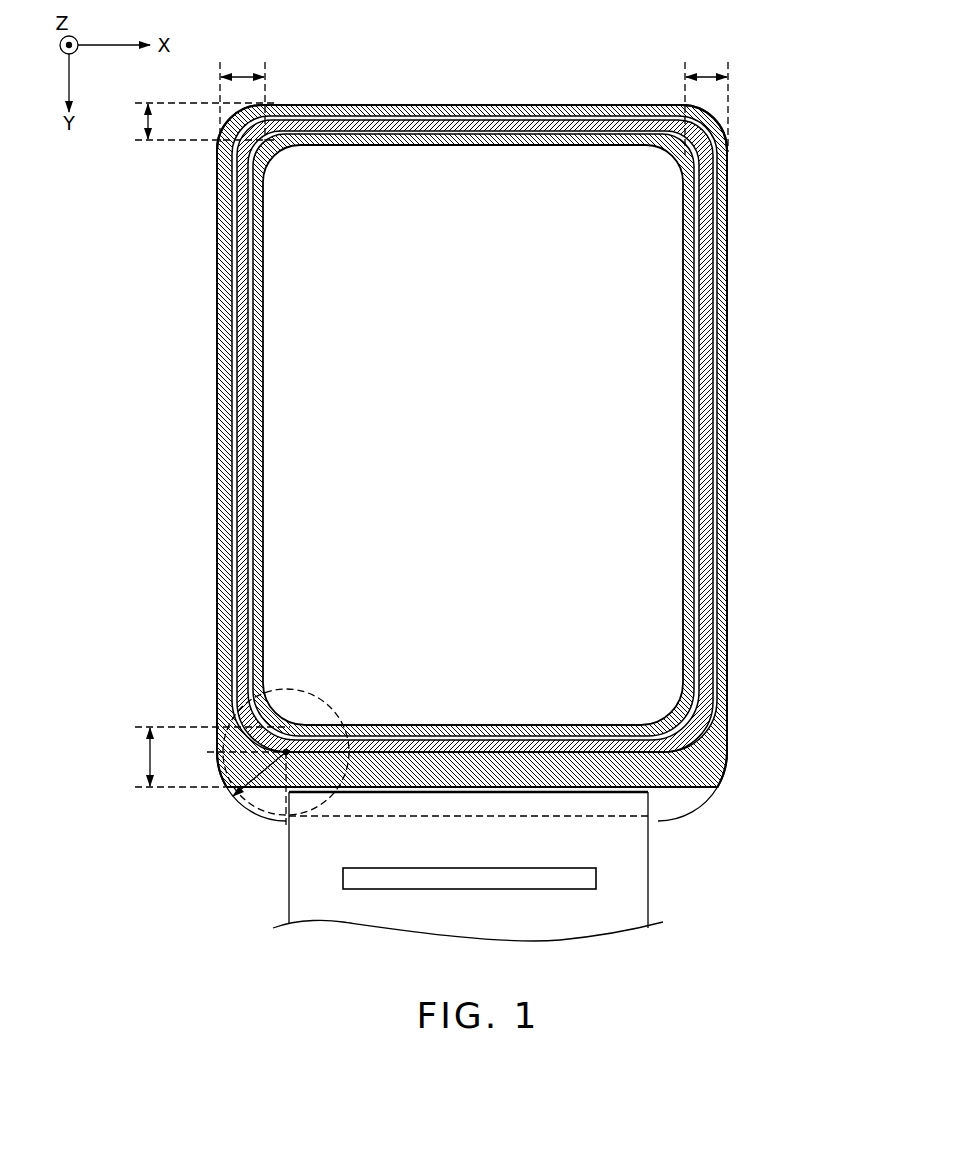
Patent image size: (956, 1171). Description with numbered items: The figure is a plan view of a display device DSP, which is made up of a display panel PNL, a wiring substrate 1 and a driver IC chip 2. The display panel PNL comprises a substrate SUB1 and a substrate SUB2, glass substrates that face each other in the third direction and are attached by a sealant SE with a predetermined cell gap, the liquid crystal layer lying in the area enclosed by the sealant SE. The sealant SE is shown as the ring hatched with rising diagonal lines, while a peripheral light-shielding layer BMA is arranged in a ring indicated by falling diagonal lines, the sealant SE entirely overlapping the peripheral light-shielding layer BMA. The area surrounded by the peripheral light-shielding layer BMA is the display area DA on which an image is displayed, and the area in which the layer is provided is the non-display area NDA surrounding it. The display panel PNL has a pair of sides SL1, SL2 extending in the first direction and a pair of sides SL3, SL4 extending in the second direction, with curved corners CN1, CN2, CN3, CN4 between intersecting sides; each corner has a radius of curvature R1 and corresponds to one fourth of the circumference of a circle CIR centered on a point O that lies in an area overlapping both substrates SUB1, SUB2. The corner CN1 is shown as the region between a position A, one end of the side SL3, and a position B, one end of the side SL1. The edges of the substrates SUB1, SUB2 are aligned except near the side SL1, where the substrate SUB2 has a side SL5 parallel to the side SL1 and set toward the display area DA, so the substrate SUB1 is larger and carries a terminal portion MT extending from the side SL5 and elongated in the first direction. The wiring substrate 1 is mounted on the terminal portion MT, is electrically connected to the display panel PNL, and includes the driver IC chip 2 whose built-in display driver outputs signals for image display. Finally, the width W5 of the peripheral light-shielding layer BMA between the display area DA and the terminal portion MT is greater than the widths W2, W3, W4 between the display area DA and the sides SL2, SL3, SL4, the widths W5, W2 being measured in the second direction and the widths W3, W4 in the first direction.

The display device DSP is at (346, 71).
The display panel PNL is at (803, 186).
The substrate SUB1 is at (714, 801).
The substrate SUB2 is at (733, 738).
The sealant SE is at (710, 580).
The peripheral light-shielding layer BMA is at (720, 616).
The non-display area NDA is at (693, 298).
The display area DA is at (653, 247).
The side SL1 is at (343, 820).
The side SL2 is at (466, 99).
The side SL3 is at (213, 443).
The side SL4 is at (732, 443).
The side SL5 is at (687, 794).
The corner CN1 is at (241, 810).
The corner CN2 is at (727, 779).
The corner CN3 is at (233, 122).
The corner CN4 is at (708, 110).
The width W2 is at (192, 121).
The width W3 is at (242, 95).
The width W4 is at (706, 102).
The width W5 is at (197, 757).
The position A is at (240, 752).
The position B is at (279, 801).
The point O is at (288, 750).
The circle CIR is at (284, 690).
The radius of curvature R1 is at (265, 797).
The terminal portion MT is at (659, 799).
The wiring substrate 1 is at (637, 901).
The driver IC chip 2 is at (412, 884).